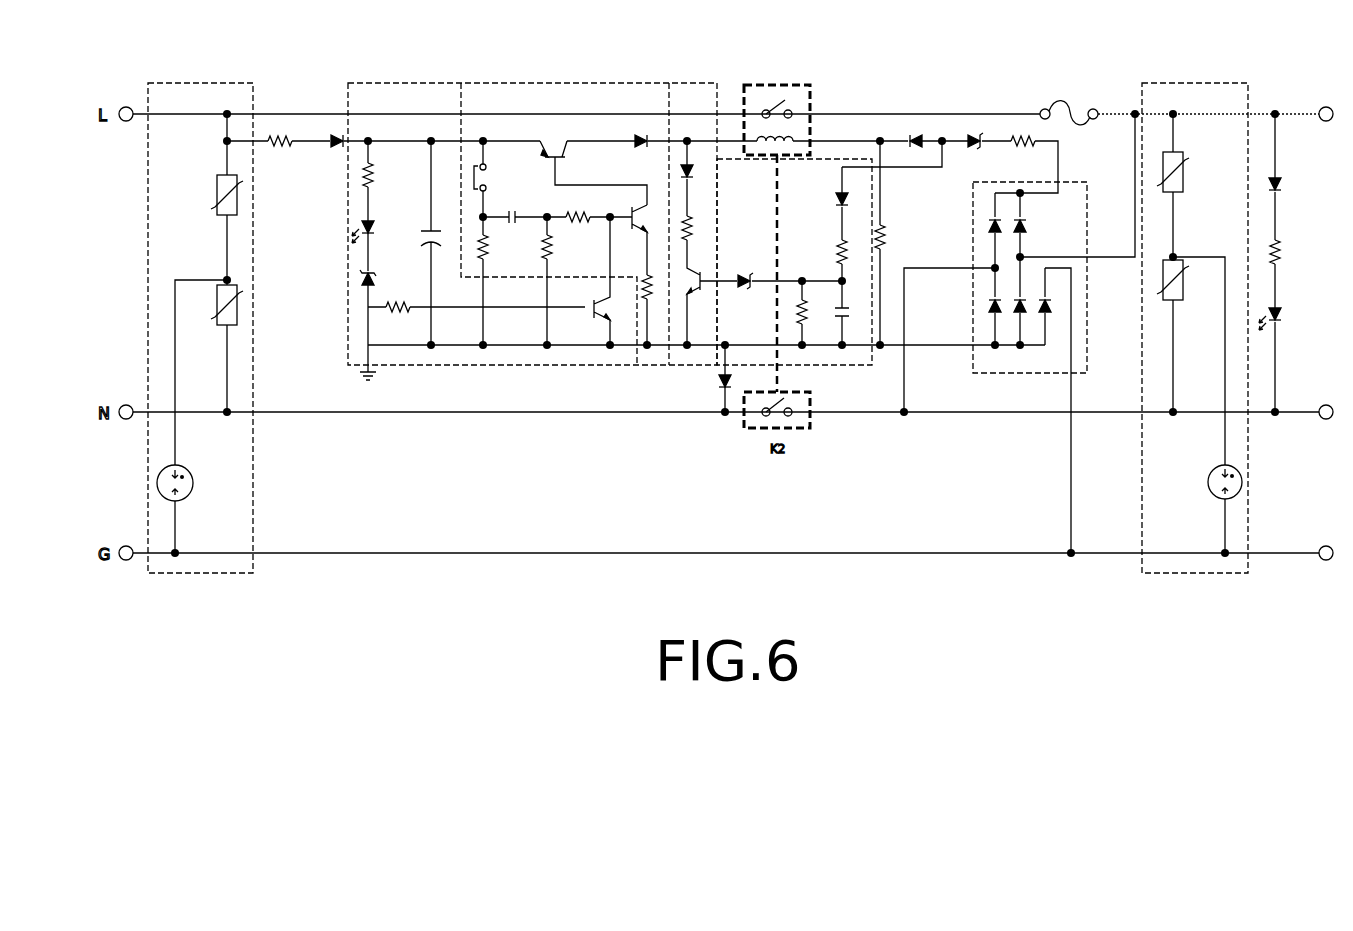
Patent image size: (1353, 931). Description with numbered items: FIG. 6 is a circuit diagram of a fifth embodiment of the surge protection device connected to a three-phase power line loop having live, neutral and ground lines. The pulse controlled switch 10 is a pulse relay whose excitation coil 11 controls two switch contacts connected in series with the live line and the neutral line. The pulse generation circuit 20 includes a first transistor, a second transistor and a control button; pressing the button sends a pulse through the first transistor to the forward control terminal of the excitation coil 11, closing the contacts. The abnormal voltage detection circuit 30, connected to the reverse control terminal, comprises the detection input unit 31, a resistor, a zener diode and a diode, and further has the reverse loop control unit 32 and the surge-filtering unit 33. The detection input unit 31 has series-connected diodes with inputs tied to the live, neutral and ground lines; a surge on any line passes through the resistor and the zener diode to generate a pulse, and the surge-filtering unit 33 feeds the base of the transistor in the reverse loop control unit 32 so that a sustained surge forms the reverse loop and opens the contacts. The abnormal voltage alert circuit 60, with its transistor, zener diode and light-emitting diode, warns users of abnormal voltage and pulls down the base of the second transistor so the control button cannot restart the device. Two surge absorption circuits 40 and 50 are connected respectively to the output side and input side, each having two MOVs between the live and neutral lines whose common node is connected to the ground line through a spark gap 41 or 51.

The pulse controlled switch 10 is at (814, 209).
The excitation coil 11 is at (797, 140).
The pulse generation circuit 20 is at (578, 222).
The abnormal voltage detection circuit 30 is at (960, 112).
The detection input unit 31 is at (1040, 375).
The reverse loop control unit 32 is at (697, 367).
The surge-filtering unit 33 is at (820, 370).
The surge absorption circuit 40 is at (1196, 354).
The spark gap 41 is at (1205, 511).
The surge absorption circuit 50 is at (248, 354).
The spark gap 51 is at (195, 511).
The abnormal voltage alert circuit 60 is at (348, 290).